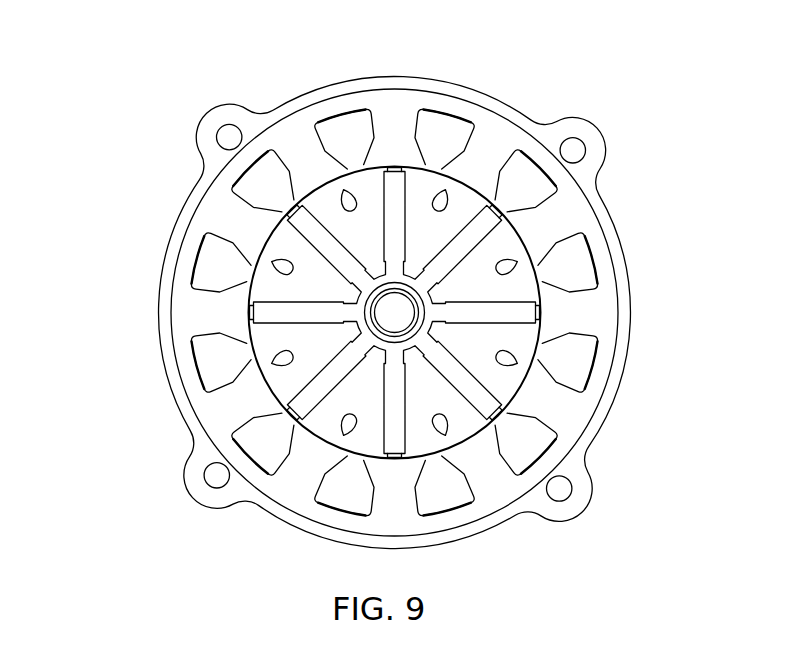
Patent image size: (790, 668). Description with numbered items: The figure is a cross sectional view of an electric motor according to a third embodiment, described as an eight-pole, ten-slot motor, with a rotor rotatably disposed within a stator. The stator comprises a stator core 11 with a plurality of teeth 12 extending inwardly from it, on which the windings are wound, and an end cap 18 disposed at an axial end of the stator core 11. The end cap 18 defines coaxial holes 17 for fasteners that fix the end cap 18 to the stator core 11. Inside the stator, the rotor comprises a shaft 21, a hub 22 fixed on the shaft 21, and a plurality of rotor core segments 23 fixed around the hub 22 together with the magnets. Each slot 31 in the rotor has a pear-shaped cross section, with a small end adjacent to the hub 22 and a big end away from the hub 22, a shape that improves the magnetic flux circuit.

The stator core 11 is at (287, 498).
The teeth 12 is at (237, 228).
The coaxial holes 17 is at (575, 150).
The end cap 18 is at (308, 97).
The shaft 21 is at (394, 313).
The hub 22 is at (291, 411).
The rotor core segments 23 is at (423, 197).
The slot 31 is at (504, 358).